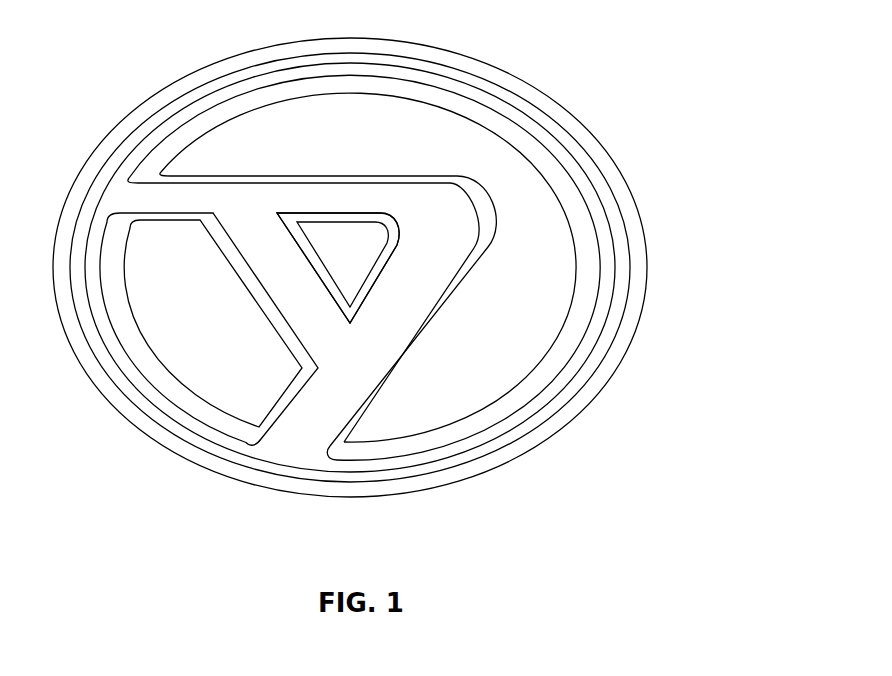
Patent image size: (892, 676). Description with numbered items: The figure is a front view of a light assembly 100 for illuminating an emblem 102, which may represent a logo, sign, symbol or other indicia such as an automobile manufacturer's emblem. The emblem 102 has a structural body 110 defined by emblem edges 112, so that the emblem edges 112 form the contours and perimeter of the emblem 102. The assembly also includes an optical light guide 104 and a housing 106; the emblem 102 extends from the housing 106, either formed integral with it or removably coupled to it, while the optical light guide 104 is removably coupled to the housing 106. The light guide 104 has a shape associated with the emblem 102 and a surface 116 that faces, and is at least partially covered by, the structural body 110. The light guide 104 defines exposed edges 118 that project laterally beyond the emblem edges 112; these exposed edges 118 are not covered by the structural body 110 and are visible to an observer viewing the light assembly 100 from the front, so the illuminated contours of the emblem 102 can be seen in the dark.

The light assembly 100 is at (631, 73).
The emblem 102 is at (401, 195).
The optical light guide 104 is at (585, 346).
The housing 106 is at (573, 407).
The structural body 110 is at (397, 313).
The emblem edges 112 is at (605, 259).
The surface 116 is at (593, 275).
The exposed edges 118 is at (577, 300).